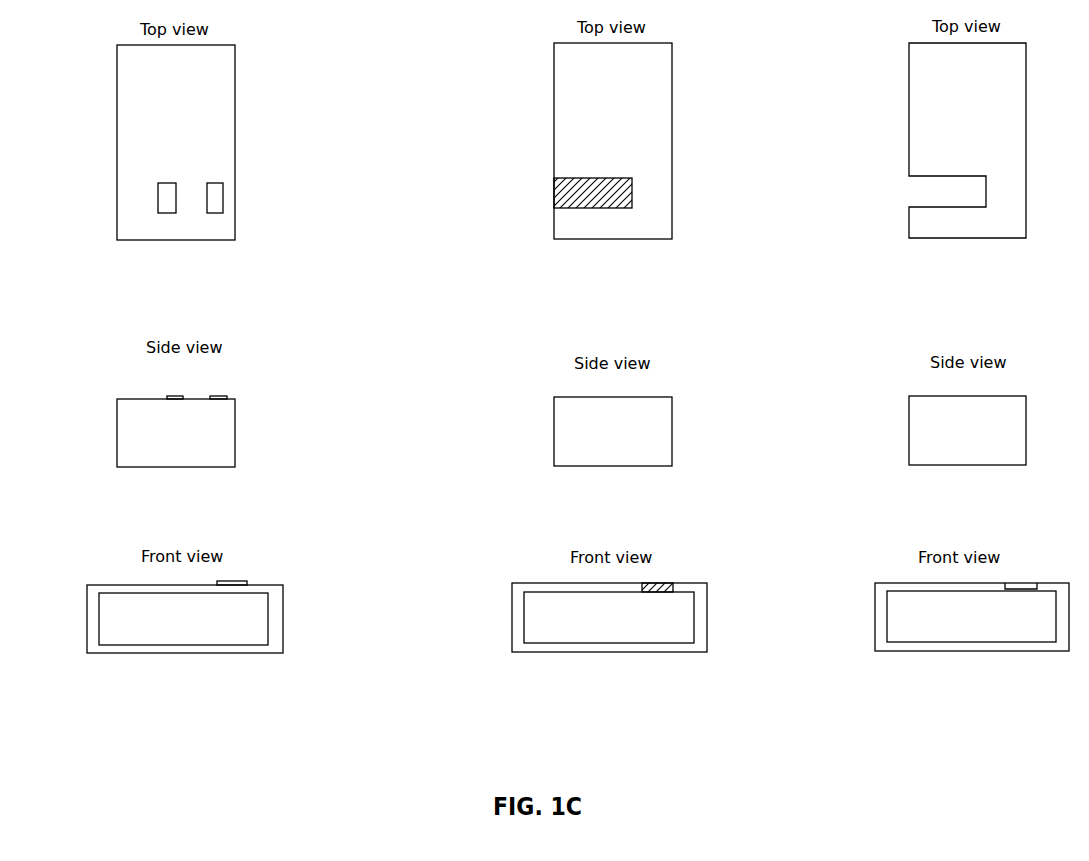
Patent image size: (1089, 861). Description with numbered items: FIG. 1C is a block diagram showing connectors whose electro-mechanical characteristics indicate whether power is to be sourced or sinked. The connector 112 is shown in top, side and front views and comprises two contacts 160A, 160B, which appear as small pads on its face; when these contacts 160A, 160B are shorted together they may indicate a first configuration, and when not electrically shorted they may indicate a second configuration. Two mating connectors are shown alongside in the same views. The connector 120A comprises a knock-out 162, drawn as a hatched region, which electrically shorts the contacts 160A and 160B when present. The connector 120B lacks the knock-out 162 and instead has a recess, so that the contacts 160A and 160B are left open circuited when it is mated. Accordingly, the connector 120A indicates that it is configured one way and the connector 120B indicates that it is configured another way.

The connector 112 is at (117, 112).
The contact 160A is at (166, 183).
The contact 160B is at (212, 183).
The connector 120A is at (554, 112).
The knock-out 162 is at (606, 177).
The connector 120B is at (908, 110).